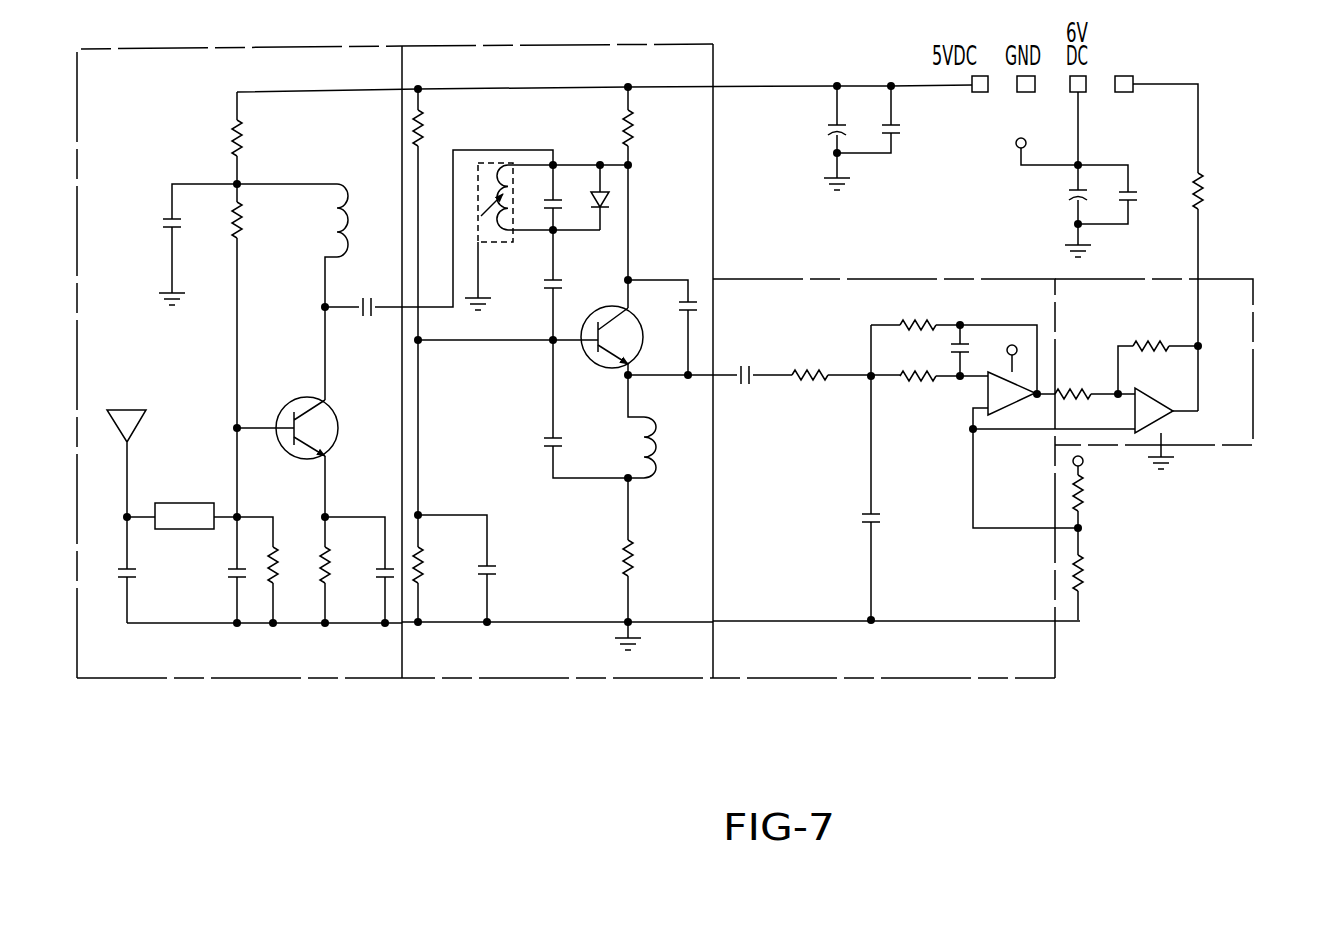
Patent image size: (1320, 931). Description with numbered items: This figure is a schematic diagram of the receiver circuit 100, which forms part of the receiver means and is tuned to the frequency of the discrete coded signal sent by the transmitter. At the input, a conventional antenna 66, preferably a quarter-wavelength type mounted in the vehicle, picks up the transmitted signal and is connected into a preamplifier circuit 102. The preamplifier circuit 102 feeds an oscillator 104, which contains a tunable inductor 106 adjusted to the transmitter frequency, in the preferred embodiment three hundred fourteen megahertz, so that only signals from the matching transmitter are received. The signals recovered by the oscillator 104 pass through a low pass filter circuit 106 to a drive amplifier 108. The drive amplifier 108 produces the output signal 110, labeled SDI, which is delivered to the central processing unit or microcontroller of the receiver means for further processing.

The antenna 66 is at (166, 503).
The receiver circuit 100 is at (684, 20).
The preamplifier circuit 102 is at (254, 388).
The oscillator 104 is at (585, 662).
The tunable inductor / low pass filter circuit 106 is at (504, 193).
The drive amplifier 108 is at (1210, 439).
The output signal 110 is at (1163, 43).